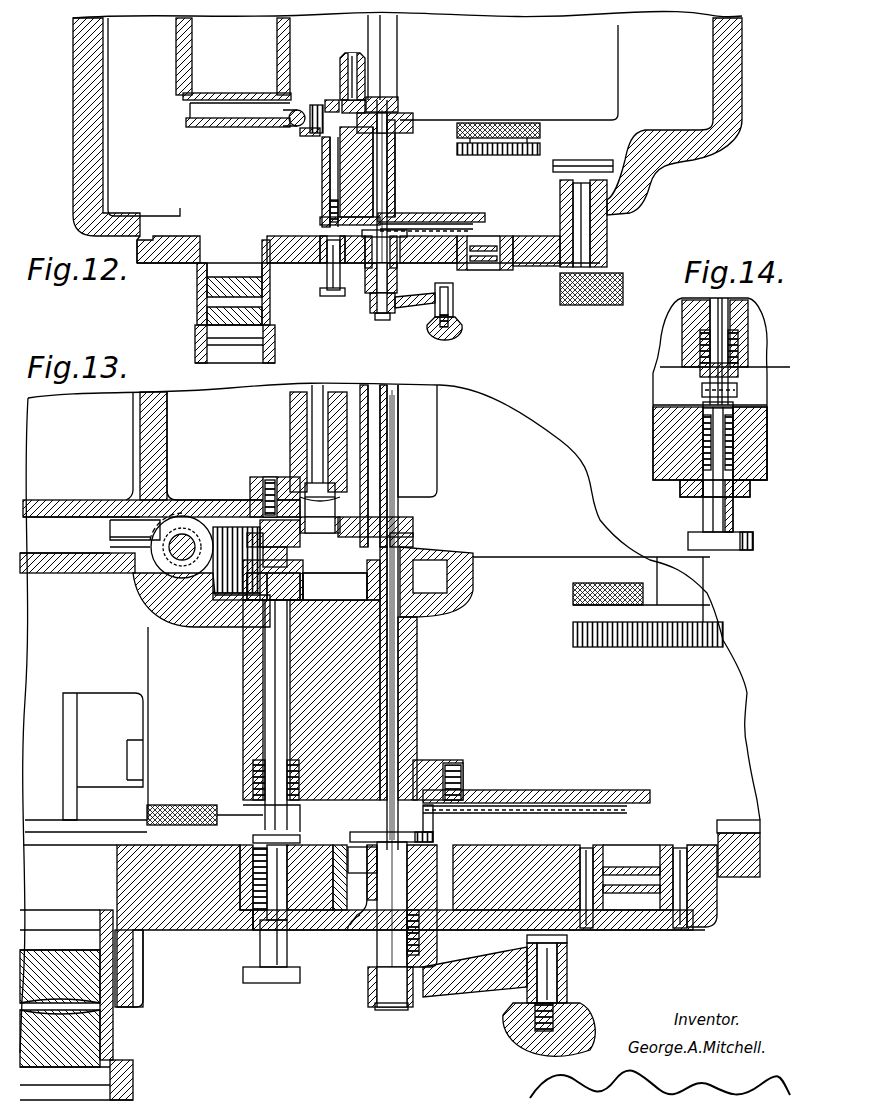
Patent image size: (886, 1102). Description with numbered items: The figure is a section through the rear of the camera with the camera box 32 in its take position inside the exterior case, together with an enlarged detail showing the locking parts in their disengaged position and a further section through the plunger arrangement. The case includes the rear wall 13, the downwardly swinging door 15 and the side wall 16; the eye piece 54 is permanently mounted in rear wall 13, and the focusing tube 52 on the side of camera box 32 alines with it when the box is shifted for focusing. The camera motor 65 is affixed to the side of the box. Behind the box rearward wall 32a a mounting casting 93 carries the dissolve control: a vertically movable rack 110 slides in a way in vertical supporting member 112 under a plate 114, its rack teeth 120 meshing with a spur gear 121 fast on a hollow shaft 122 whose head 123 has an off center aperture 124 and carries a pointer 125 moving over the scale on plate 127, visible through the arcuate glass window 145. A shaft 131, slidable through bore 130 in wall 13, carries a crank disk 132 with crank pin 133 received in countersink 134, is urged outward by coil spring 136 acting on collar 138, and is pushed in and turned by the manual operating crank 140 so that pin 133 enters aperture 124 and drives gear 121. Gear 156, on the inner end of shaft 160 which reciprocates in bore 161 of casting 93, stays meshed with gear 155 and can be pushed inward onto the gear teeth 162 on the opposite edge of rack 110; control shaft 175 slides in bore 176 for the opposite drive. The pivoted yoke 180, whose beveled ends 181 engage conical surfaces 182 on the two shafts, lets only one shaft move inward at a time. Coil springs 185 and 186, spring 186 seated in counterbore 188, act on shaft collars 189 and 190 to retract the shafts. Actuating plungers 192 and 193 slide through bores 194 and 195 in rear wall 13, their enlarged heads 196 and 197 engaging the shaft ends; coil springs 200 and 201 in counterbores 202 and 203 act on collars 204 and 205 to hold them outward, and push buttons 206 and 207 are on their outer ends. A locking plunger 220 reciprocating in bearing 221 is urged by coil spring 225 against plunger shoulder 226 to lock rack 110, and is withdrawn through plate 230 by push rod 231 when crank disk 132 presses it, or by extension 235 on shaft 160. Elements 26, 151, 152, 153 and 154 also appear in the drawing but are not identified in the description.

In FIG. 12, the rear wall 13 is at (288, 275).
In FIG. 14, the rear wall 13 is at (662, 480).
In FIG. 13, the rear wall 13 is at (163, 930).
In FIG. 12, the downwardly swinging door 15 is at (73, 129).
In FIG. 12, the side wall 16 is at (743, 78).
In FIG. 13, the flange 26 is at (147, 932).
In FIG. 12, the camera box 32 is at (180, 108).
In FIG. 13, the camera box rearward wall 32a is at (60, 497).
In FIG. 12, the focusing tube 52 is at (123, 70).
In FIG. 12, the eye piece 54 is at (203, 317).
In FIG. 13, the eye piece 54 is at (113, 1046).
In FIG. 12, the camera motor 65 is at (613, 67).
In FIG. 12, the mounting casting 93 is at (368, 183).
In FIG. 13, the mounting casting 93 is at (350, 712).
In FIG. 13, the rack 110 is at (335, 586).
In FIG. 12, the vertical supporting member 112 is at (332, 100).
In FIG. 13, the vertical supporting member 112 is at (283, 478).
In FIG. 13, the plate 114 is at (394, 653).
In FIG. 13, the rack teeth 120 is at (370, 500).
In FIG. 13, the spur gear 121 is at (467, 588).
In FIG. 13, the hollow shaft 122 is at (418, 633).
In FIG. 13, the head 123 is at (420, 793).
In FIG. 12, the off center aperture 124 is at (426, 230).
In FIG. 13, the off center aperture 124 is at (430, 813).
In FIG. 12, the pointer 125 is at (467, 226).
In FIG. 13, the pointer 125 is at (610, 817).
In FIG. 12, the plate 127 is at (457, 213).
In FIG. 13, the plate 127 is at (627, 790).
In FIG. 13, the bore 130 is at (367, 900).
In FIG. 12, the shaft 131 is at (382, 318).
In FIG. 13, the shaft 131 is at (377, 993).
In FIG. 12, the crank disk 132 is at (392, 245).
In FIG. 13, the crank disk 132 is at (352, 837).
In FIG. 12, the crank pin 133 is at (455, 270).
In FIG. 13, the crank pin 133 is at (425, 827).
In FIG. 12, the countersink 134 is at (362, 270).
In FIG. 13, the countersink 134 is at (362, 860).
In FIG. 13, the coil spring 136 is at (420, 943).
In FIG. 13, the collar 138 is at (430, 977).
In FIG. 12, the manual operating crank 140 is at (453, 303).
In FIG. 13, the manual operating crank 140 is at (567, 970).
In FIG. 12, the arcuate glass window 145 is at (500, 268).
In FIG. 13, the arcuate glass window 145 is at (625, 893).
In FIG. 12, the shaft 151 is at (290, 123).
In FIG. 13, the shaft 151 is at (177, 560).
In FIG. 13, the bearing 152 is at (157, 533).
In FIG. 12, the worm 153 is at (313, 108).
In FIG. 13, the worm 153 is at (213, 535).
In FIG. 13, the housing 154 is at (187, 627).
In FIG. 12, the gear 155 is at (300, 145).
In FIG. 13, the gear 155 is at (222, 590).
In FIG. 13, the gear 156 is at (257, 613).
In FIG. 12, the shaft 160 is at (330, 155).
In FIG. 13, the shaft 160 is at (268, 680).
In FIG. 12, the bore 161 is at (333, 172).
In FIG. 13, the bore 161 is at (263, 720).
In FIG. 13, the gear teeth 162 is at (270, 557).
In FIG. 14, the control shaft 175 is at (720, 318).
In FIG. 14, the bore 176 is at (683, 299).
In FIG. 13, the pivoted yoke 180 is at (311, 580).
In FIG. 13, the beveled ends 181 is at (266, 653).
In FIG. 13, the conical surfaces 182 is at (250, 637).
In FIG. 12, the coil spring 185 is at (331, 208).
In FIG. 13, the coil spring 185 is at (253, 770).
In FIG. 14, the coil spring 186 is at (737, 340).
In FIG. 14, the counterbore 188 is at (739, 351).
In FIG. 13, the shaft collar 189 is at (205, 815).
In FIG. 14, the shaft collar 190 is at (739, 376).
In FIG. 12, the actuating plunger 192 is at (334, 282).
In FIG. 13, the actuating plunger 192 is at (270, 953).
In FIG. 14, the actuating plunger 193 is at (713, 508).
In FIG. 13, the bore 194 is at (147, 845).
In FIG. 14, the bore 195 is at (662, 413).
In FIG. 13, the enlarged head 196 is at (263, 838).
In FIG. 14, the enlarged head 197 is at (703, 403).
In FIG. 12, the coil spring 200 is at (317, 263).
In FIG. 13, the coil spring 200 is at (207, 930).
In FIG. 14, the coil spring 201 is at (662, 433).
In FIG. 13, the counterbore 202 is at (255, 875).
In FIG. 14, the counterbore 203 is at (750, 445).
In FIG. 13, the shaft collar 204 is at (350, 913).
In FIG. 14, the shaft collar 205 is at (740, 527).
In FIG. 12, the push button 206 is at (335, 296).
In FIG. 13, the push button 206 is at (283, 983).
In FIG. 14, the push button 207 is at (733, 553).
In FIG. 12, the locking plunger 220 is at (373, 110).
In FIG. 13, the locking plunger 220 is at (368, 480).
In FIG. 12, the bearing 221 is at (340, 62).
In FIG. 13, the bearing 221 is at (348, 437).
In FIG. 13, the coil spring 225 is at (297, 442).
In FIG. 13, the plunger shoulder 226 is at (293, 467).
In FIG. 12, the plate 230 is at (392, 114).
In FIG. 13, the plate 230 is at (392, 520).
In FIG. 12, the push rod 231 is at (392, 168).
In FIG. 13, the push rod 231 is at (413, 547).
In FIG. 13, the extension 235 is at (217, 582).